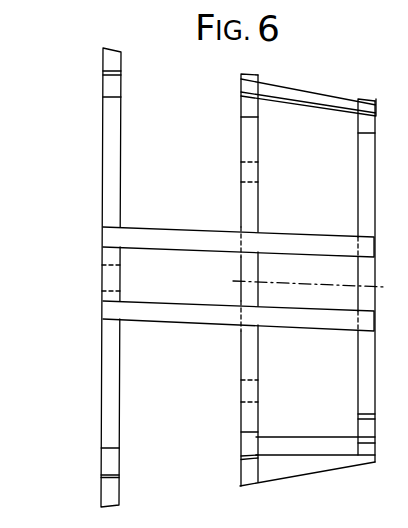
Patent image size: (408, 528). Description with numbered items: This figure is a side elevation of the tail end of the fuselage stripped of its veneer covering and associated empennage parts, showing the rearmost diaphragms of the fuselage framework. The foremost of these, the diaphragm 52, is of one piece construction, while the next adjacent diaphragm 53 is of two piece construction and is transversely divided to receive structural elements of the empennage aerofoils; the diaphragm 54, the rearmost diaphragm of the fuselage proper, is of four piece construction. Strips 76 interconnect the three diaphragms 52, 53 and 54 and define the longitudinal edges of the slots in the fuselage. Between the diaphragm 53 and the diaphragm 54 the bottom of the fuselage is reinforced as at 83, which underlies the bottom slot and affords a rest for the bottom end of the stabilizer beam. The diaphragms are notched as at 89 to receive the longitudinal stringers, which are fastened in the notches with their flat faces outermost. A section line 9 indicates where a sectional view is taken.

The diaphragm 52 is at (117, 152).
The diaphragm 53 is at (243, 141).
The diaphragm 54 is at (367, 150).
The strips 76 is at (198, 247).
The reinforcement 83 is at (312, 463).
The notches 89 is at (107, 88).
The section line 9- 9 is at (233, 281).